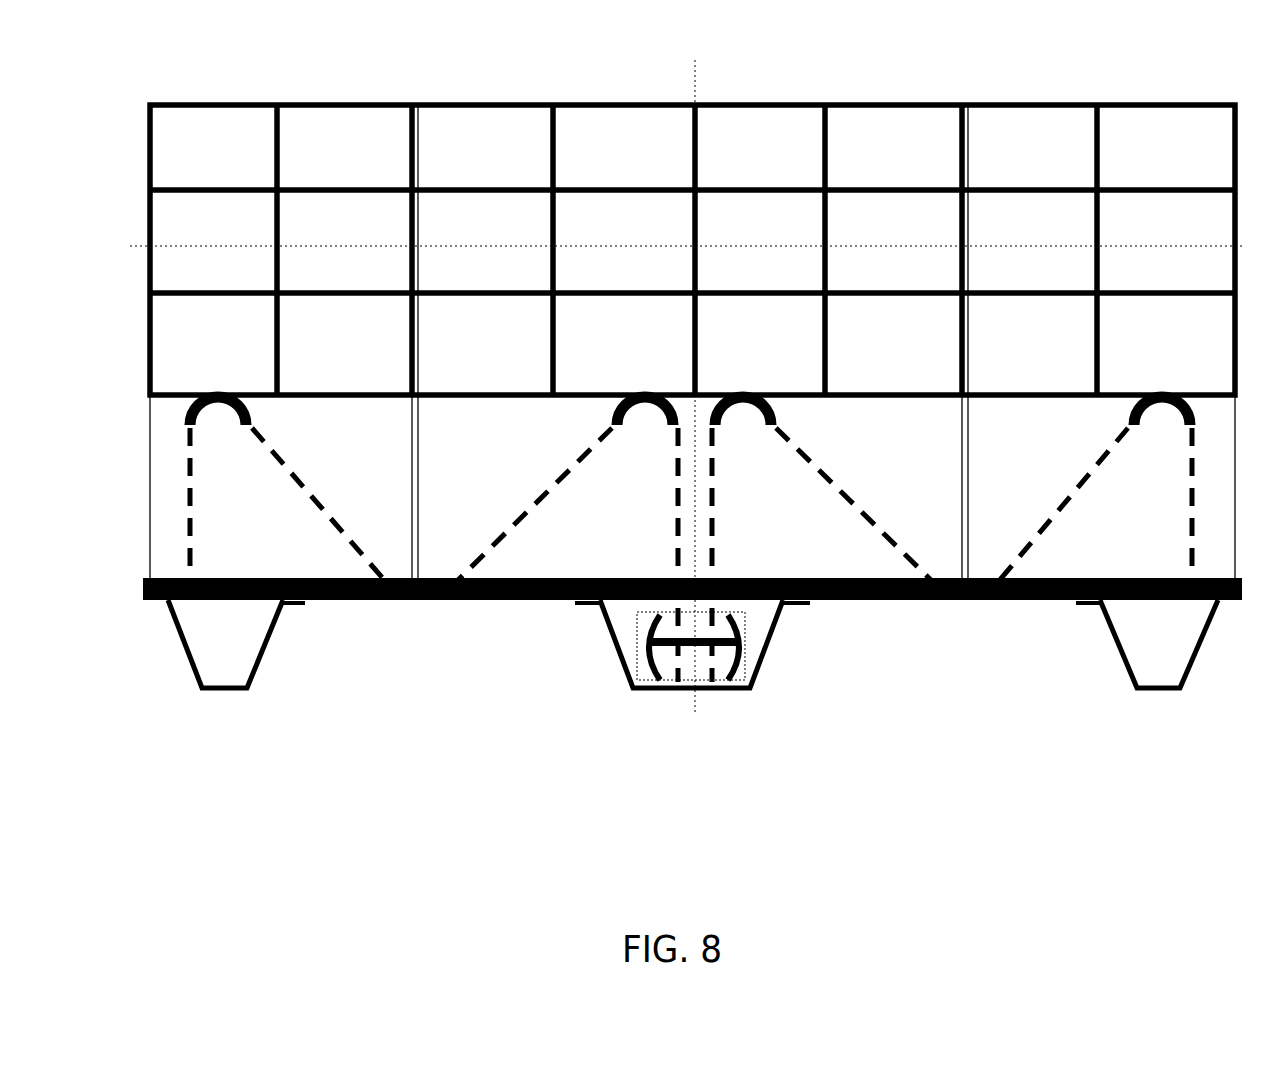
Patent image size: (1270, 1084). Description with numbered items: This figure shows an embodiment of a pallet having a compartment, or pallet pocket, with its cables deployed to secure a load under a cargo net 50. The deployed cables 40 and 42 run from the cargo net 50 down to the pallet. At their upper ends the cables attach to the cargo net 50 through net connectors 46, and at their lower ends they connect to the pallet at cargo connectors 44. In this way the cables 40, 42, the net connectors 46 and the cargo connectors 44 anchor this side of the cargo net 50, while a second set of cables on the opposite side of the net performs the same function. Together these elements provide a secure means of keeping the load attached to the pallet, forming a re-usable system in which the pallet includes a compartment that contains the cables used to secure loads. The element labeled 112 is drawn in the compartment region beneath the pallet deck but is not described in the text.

The cargo net 50 is at (513, 100).
The net connectors 46 is at (622, 395).
The cable 40 is at (513, 518).
The cable 42 is at (1067, 488).
The cargo connectors 44 is at (407, 600).
The tensioner / ratchet 112 is at (633, 627).